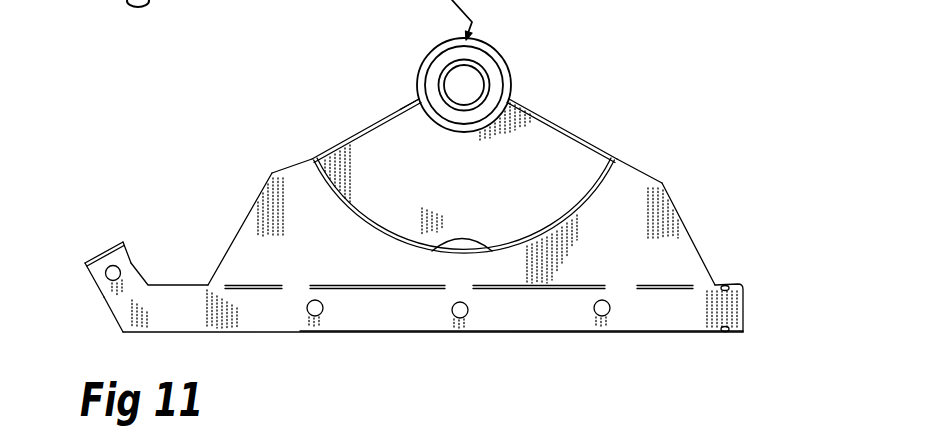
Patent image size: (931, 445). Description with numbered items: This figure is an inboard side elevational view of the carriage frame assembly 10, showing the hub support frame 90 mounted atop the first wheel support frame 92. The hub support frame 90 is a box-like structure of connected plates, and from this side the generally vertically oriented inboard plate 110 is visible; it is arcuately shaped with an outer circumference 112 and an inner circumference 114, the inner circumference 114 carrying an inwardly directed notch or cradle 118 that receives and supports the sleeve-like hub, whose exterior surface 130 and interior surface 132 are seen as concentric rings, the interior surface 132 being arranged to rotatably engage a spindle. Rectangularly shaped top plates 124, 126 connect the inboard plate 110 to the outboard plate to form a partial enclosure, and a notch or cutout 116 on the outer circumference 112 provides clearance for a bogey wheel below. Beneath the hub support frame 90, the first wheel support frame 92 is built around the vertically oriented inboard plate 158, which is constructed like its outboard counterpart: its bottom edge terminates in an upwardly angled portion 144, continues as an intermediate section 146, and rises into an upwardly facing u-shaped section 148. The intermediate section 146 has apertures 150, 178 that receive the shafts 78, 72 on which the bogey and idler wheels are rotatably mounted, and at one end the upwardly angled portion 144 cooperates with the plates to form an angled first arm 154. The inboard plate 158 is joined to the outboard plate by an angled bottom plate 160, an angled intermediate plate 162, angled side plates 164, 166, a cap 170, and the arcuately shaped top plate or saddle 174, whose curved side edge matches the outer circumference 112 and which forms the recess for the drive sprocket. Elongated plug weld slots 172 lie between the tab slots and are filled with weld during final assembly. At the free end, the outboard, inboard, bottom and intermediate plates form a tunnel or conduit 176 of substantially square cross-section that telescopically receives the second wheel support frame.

The mounting assembly 10 is at (408, 38).
The exterior surface 130 is at (496, 50).
The interior surface 132 is at (486, 88).
The hub support frame 90 is at (536, 93).
The top plate 124 is at (330, 150).
The top plate 126 is at (602, 138).
The inner circumference 114 is at (412, 104).
The notch or cradle 118 is at (459, 102).
The inboard plate 110 is at (496, 174).
The outer circumference 112 is at (356, 206).
The top plate or saddle 174 is at (508, 242).
The notch or cutout 116 is at (466, 242).
The u-shaped section 148 is at (332, 226).
The angled side plate 164 is at (270, 174).
The angled side plate 166 is at (668, 194).
The first wheel support frame 92 is at (218, 226).
The inboard plate 158 is at (690, 257).
The intermediate plate 162 is at (168, 286).
The first arm 154 is at (131, 262).
The cap 170 is at (86, 262).
The aperture 178 is at (114, 268).
The shaft 72 is at (106, 277).
The upwardly angled portion 144 is at (108, 310).
The angled bottom plate 160 is at (216, 333).
The tunnel or conduit 176 is at (745, 320).
The plug weld slots 172 is at (308, 287).
The apertures 150 is at (311, 314).
The shafts 78 is at (322, 313).
The intermediate section 146 is at (388, 334).